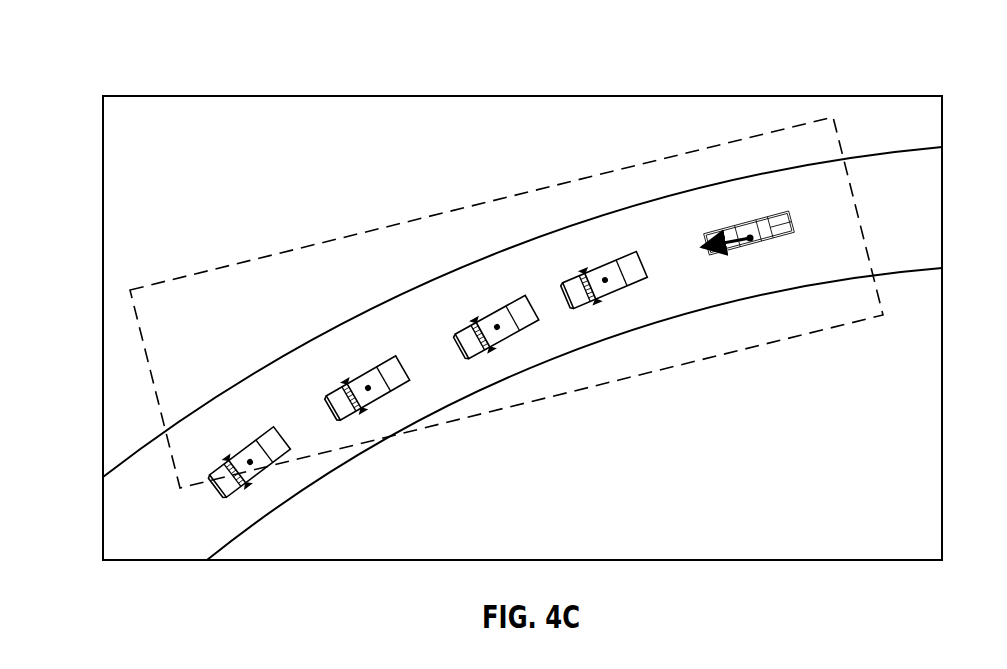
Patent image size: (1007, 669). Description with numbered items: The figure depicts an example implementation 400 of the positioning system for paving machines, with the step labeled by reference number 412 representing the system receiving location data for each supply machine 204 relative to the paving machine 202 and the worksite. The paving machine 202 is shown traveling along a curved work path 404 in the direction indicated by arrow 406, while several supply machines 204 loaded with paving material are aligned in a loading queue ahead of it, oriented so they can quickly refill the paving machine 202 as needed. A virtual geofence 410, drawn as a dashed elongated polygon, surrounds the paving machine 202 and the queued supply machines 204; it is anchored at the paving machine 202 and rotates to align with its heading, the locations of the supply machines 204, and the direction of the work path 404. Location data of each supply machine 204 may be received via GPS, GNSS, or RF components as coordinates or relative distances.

The example implementation 400 is at (121, 42).
The reference number 412 is at (288, 95).
The work path 404 is at (265, 361).
The virtual geofence 410 is at (688, 153).
The supply machine 204 is at (228, 481).
The paving machine 202 is at (762, 244).
The arrow 406 is at (738, 236).